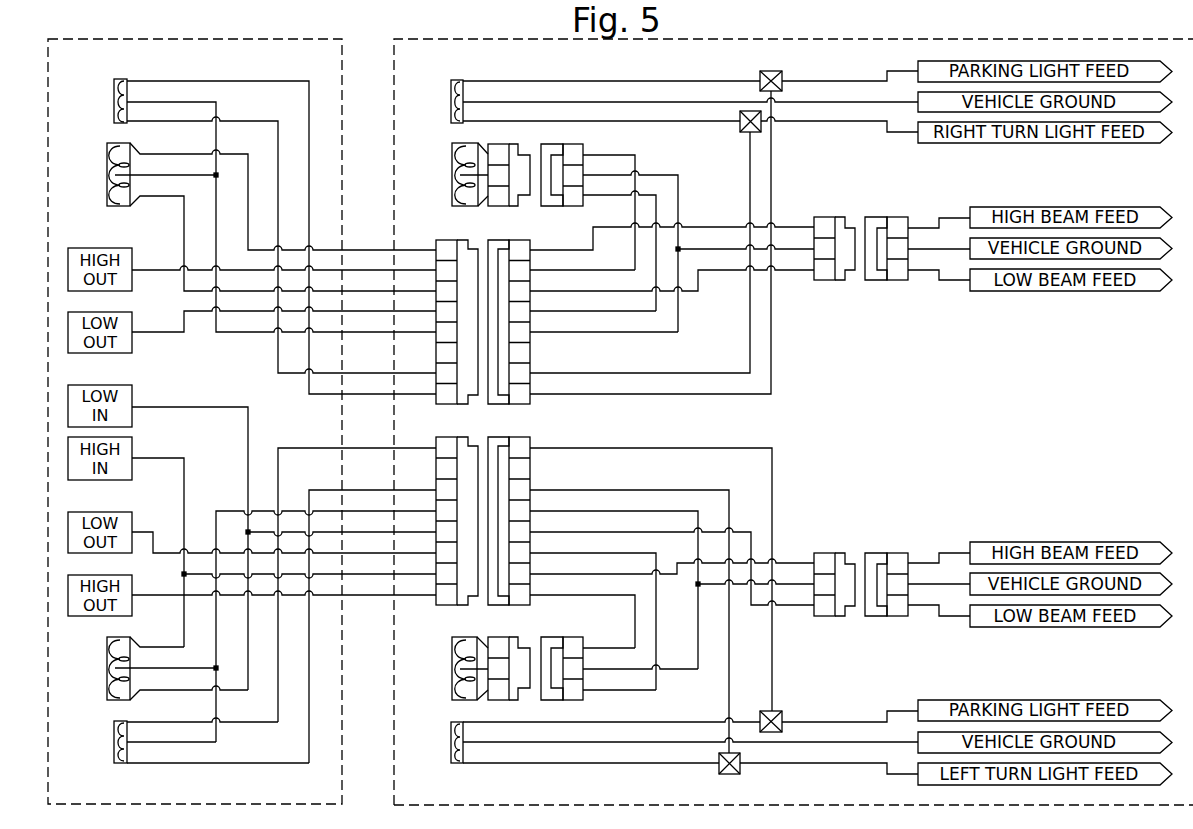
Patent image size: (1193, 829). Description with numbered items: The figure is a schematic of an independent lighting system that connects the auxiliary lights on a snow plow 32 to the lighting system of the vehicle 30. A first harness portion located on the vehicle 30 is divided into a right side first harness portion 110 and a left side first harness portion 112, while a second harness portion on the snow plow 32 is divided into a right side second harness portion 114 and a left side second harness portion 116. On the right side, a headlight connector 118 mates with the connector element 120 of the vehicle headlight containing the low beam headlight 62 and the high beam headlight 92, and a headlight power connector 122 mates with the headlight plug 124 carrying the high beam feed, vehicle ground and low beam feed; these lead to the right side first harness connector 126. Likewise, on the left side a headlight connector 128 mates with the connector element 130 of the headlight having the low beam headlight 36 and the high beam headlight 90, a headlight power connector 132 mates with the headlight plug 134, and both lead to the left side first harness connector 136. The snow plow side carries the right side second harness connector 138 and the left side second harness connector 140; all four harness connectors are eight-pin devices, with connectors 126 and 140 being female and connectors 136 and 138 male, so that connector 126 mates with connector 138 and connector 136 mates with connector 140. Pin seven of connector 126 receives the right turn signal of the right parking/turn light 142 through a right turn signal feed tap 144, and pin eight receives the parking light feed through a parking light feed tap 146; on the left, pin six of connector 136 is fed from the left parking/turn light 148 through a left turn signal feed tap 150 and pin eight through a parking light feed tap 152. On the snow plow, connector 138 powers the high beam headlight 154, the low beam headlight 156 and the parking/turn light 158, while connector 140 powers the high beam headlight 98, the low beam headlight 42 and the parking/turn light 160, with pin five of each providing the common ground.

The vehicle 30 is at (757, 39).
The snow plow 32 is at (195, 39).
The low beam headlight 36 is at (466, 700).
The low beam headlight 42 is at (118, 700).
The low beam headlight 62 is at (466, 206).
The high beam headlight 90 is at (468, 637).
The high beam headlight 92 is at (468, 143).
The high beam headlight 98 is at (120, 637).
The right side first harness portion 110 is at (782, 343).
The left side first harness portion 112 is at (782, 480).
The right side second harness portion 114 is at (258, 342).
The left side second harness portion 116 is at (285, 440).
The headlight connector 118 is at (560, 206).
The connector element 120 is at (503, 206).
The headlight power connector 122 is at (843, 217).
The headlight plug 124 is at (893, 217).
The right side first harness connector 126 is at (505, 404).
The headlight connector 128 is at (562, 637).
The connector element 130 is at (508, 637).
The headlight power connector 132 is at (843, 553).
The headlight plug 134 is at (893, 553).
The left side first harness connector 136 is at (505, 437).
The right side second harness connector 138 is at (458, 404).
The left side second harness connector 140 is at (458, 605).
The right parking/turn light 142 is at (458, 80).
The right turn signal feed tap 144 is at (745, 132).
The parking light feed tap 146 is at (775, 71).
The left parking/turn light 148 is at (458, 763).
The left turn signal feed tap 150 is at (728, 774).
The parking light feed tap 152 is at (778, 711).
The high beam headlight 154 is at (118, 206).
The low beam headlight 156 is at (118, 143).
The parking/turn light 158 is at (120, 79).
The parking/turn light 160 is at (118, 763).